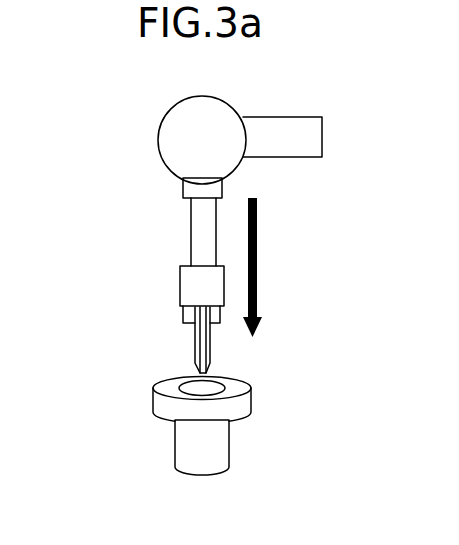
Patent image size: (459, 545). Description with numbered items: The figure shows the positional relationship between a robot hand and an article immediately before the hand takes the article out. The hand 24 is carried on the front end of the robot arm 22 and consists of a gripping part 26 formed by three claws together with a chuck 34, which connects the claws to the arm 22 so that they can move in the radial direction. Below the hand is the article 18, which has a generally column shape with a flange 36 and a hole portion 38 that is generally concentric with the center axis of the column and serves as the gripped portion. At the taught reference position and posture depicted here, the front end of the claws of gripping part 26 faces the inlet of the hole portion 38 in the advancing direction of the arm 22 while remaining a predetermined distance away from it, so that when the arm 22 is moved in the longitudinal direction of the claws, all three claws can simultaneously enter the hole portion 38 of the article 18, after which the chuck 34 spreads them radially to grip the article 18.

The article 18 is at (238, 373).
The robot arm 22 is at (147, 138).
The hand 24 is at (67, 255).
The gripping part 26 is at (195, 342).
The chuck 34 is at (180, 287).
The flange 36 is at (170, 407).
The hole portion 38 is at (194, 385).